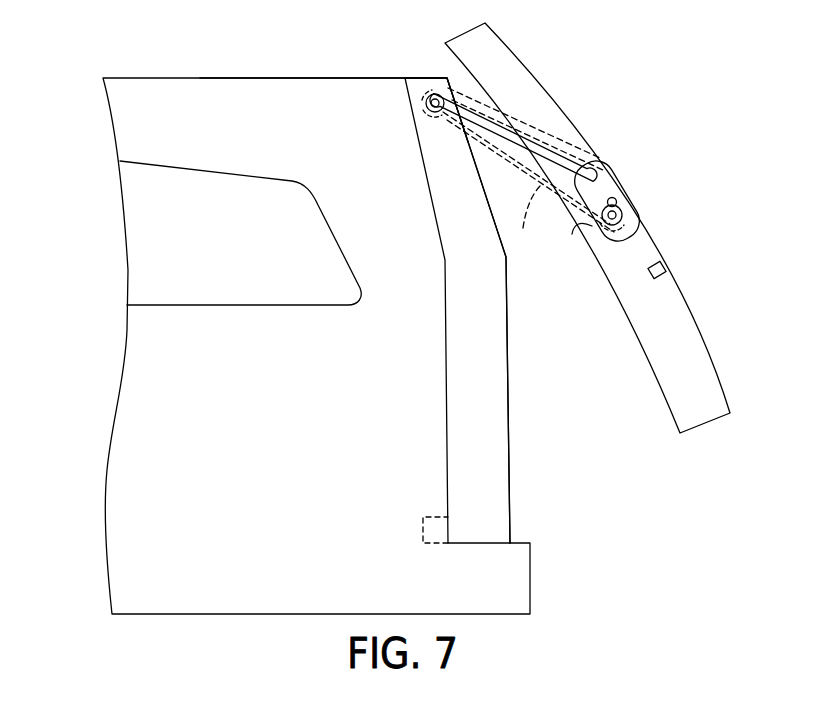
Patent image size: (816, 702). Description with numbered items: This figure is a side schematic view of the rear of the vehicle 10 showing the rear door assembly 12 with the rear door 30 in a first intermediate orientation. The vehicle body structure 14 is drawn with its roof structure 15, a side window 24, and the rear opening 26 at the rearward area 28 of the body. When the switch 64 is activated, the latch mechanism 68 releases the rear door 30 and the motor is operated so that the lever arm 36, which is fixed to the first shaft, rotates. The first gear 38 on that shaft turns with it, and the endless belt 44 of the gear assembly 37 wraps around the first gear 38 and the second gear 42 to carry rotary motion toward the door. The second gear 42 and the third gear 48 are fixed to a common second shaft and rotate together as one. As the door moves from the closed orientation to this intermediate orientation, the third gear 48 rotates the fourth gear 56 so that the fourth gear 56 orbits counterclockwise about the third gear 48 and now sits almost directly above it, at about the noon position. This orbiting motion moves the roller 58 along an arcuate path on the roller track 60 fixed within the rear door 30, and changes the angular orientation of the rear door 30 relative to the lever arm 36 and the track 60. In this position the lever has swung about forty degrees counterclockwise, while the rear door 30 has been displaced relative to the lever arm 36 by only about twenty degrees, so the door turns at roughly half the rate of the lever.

The vehicle 10 is at (401, 315).
The rear door assembly 12 is at (599, 224).
The vehicle body structure 14 is at (229, 76).
The roof structure 15 is at (291, 78).
The side window 24 is at (222, 262).
The rear opening 26 is at (450, 432).
The rearward area 28 is at (422, 77).
The rear door 30 is at (673, 352).
The lever arm 36 is at (461, 117).
The gear assembly 37 is at (556, 142).
The first gear 38 is at (426, 111).
The second gear 42 is at (618, 202).
The endless belt 44 is at (528, 169).
The third gear 48 is at (622, 216).
The fourth gear 56 is at (617, 202).
The roller 58 is at (611, 163).
The roller track 60 is at (577, 224).
The switch 64 is at (667, 263).
The latch mechanism 68 is at (428, 546).